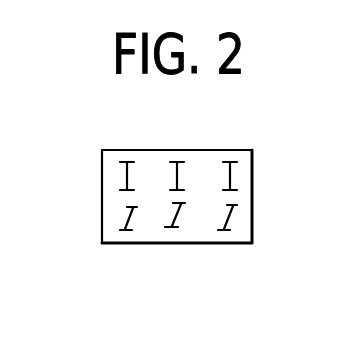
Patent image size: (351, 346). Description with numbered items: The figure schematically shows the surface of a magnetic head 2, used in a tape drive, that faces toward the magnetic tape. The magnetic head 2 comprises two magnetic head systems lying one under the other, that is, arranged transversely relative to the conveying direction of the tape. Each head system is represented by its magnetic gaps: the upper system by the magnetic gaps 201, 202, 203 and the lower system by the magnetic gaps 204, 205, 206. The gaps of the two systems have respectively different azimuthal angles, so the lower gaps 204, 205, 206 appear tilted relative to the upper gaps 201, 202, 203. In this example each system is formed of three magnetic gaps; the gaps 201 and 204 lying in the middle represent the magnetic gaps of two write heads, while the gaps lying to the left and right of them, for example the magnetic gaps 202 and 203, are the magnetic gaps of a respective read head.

The magnetic head 2 is at (132, 251).
The magnetic gap 201 is at (177, 164).
The magnetic gap 202 is at (120, 163).
The magnetic gap 203 is at (233, 171).
The magnetic gap 204 is at (178, 216).
The magnetic gap 205 is at (127, 218).
The magnetic gap 206 is at (226, 218).